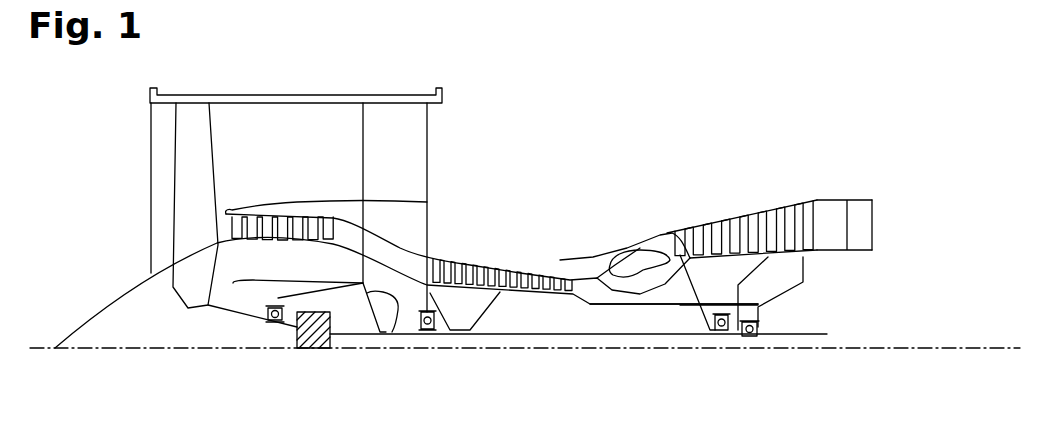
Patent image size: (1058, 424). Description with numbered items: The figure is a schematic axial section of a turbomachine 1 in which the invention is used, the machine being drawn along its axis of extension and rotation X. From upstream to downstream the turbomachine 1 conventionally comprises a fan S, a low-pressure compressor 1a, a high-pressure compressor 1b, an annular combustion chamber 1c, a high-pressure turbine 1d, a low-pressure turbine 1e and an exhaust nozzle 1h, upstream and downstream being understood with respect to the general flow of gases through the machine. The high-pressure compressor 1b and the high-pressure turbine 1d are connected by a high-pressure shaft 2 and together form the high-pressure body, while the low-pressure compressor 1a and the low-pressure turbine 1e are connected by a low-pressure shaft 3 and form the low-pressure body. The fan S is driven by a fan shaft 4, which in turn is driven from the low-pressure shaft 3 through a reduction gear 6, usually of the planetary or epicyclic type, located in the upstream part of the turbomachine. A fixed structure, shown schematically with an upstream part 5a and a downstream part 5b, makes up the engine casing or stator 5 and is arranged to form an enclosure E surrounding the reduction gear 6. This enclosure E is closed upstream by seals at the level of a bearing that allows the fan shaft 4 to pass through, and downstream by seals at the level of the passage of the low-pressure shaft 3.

The turbomachine 1 is at (550, 175).
The low-pressure compressor 1a is at (252, 213).
The high-pressure compressor 1b is at (462, 268).
The annular combustion chamber 1c is at (628, 268).
The high-pressure turbine 1d is at (680, 255).
The low-pressure turbine 1e is at (800, 217).
The exhaust nozzle 1h is at (857, 220).
The high-pressure shaft 2 is at (620, 306).
The low-pressure shaft 3 is at (528, 337).
The fan shaft 4 is at (268, 323).
The engine casing or stator 5 is at (346, 277).
The upstream part 5a is at (233, 283).
The downstream part 5b is at (392, 332).
The reduction gear 6 is at (307, 342).
The enclosure E is at (345, 300).
The fan S is at (190, 158).
The engine axis X is at (37, 352).